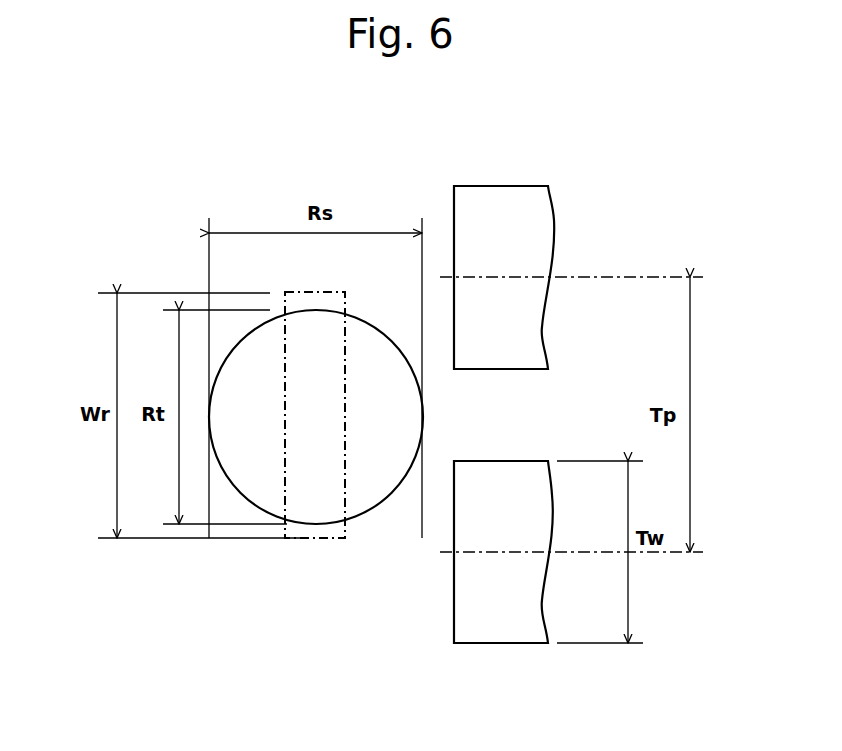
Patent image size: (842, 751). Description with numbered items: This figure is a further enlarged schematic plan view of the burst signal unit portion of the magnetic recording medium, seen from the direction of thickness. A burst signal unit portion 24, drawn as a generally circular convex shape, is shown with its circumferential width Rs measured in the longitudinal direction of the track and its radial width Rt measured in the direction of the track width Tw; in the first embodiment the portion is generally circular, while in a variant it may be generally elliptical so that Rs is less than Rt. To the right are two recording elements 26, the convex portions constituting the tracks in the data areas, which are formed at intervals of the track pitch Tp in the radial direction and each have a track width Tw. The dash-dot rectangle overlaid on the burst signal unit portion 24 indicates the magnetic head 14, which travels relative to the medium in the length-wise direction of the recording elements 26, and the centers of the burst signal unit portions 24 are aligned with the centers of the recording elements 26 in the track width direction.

The magnetic head 14 is at (312, 292).
The burst signal unit portion 24 is at (265, 324).
The recording element 26 is at (517, 186).